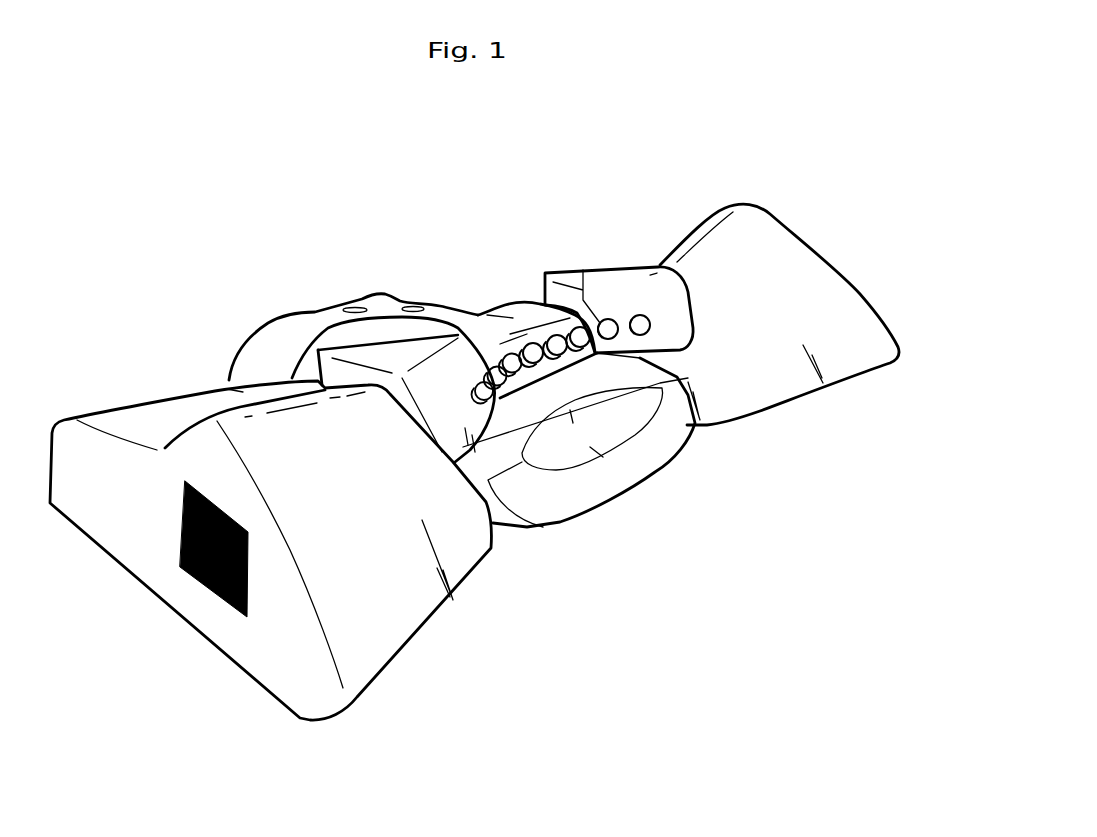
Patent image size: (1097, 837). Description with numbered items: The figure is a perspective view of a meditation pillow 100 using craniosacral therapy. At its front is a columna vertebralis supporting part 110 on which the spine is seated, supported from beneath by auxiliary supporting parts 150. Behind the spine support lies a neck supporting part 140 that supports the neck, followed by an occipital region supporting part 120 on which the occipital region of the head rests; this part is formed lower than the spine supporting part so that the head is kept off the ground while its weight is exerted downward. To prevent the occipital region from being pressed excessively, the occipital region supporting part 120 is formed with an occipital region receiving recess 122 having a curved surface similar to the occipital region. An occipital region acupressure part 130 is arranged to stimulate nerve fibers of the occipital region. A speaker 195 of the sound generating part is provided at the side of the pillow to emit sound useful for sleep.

The meditation pillow 100 is at (761, 148).
The columna vertebralis supporting part 110 is at (453, 307).
The occipital region supporting part 120 is at (608, 440).
The occipital region receiving recess 122 is at (558, 460).
The occipital region acupressure part 130 is at (616, 326).
The neck supporting part 140 is at (547, 273).
The auxiliary supporting part 150 is at (250, 637).
The speaker 195 is at (193, 570).